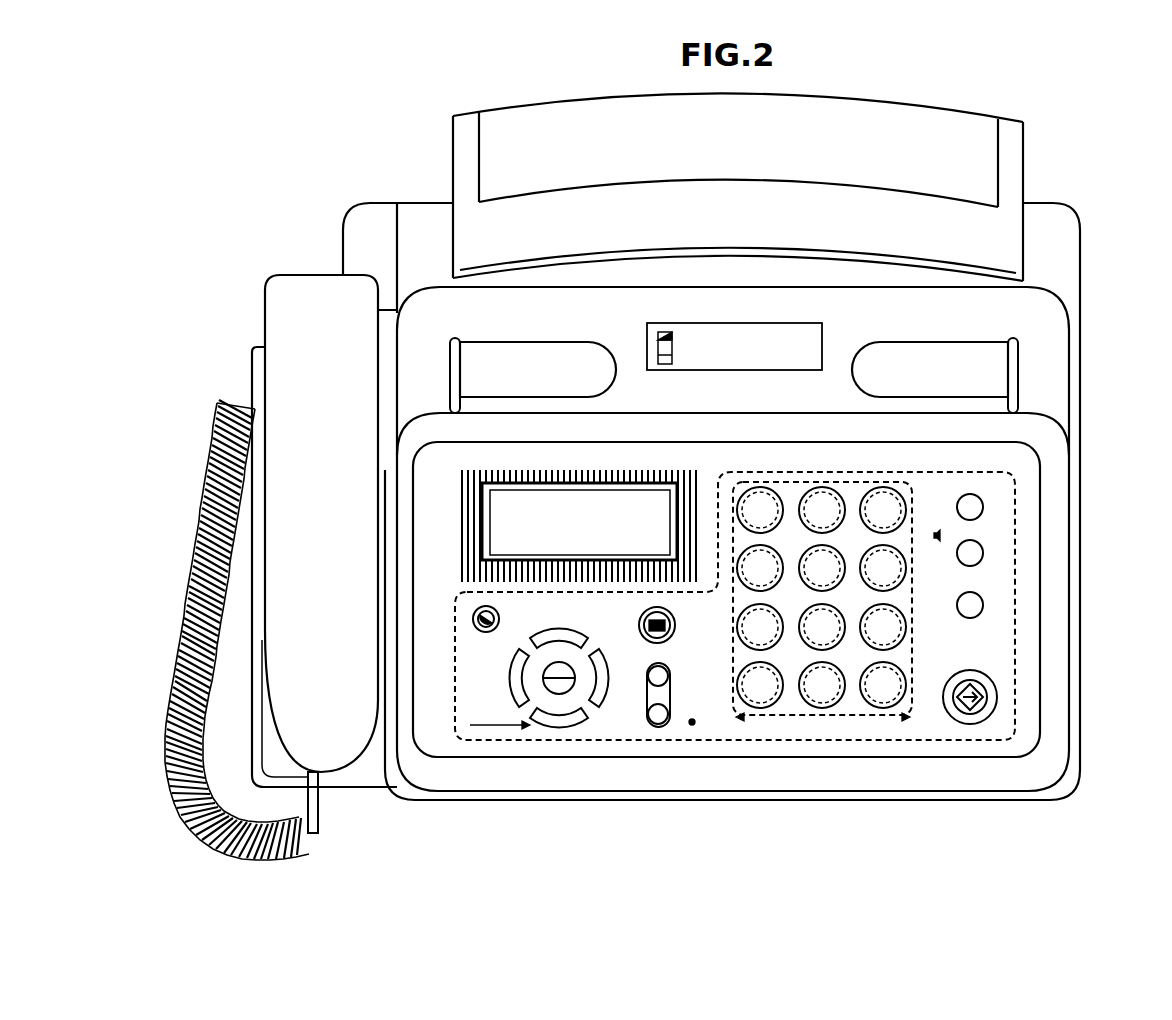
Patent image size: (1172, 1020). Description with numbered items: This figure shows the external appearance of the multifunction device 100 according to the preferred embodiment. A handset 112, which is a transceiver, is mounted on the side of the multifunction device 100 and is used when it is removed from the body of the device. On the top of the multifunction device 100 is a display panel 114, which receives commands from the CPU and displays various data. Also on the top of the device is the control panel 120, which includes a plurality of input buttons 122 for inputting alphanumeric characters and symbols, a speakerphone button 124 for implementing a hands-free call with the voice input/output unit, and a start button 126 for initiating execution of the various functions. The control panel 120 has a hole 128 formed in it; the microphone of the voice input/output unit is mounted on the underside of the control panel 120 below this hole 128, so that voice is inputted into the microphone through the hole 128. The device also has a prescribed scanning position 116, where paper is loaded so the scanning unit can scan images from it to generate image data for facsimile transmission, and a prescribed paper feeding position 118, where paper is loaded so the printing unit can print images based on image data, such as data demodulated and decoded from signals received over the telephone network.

The multifunction device 100 is at (377, 161).
The handset 112 is at (265, 297).
The display panel 114 is at (667, 548).
The scanning position 116 is at (486, 330).
The paper feeding position 118 is at (982, 154).
The control panel 120 is at (980, 742).
The input buttons 122 is at (850, 716).
The speakerphone button 124 is at (983, 551).
The start button 126 is at (985, 690).
The hole 128 is at (692, 724).